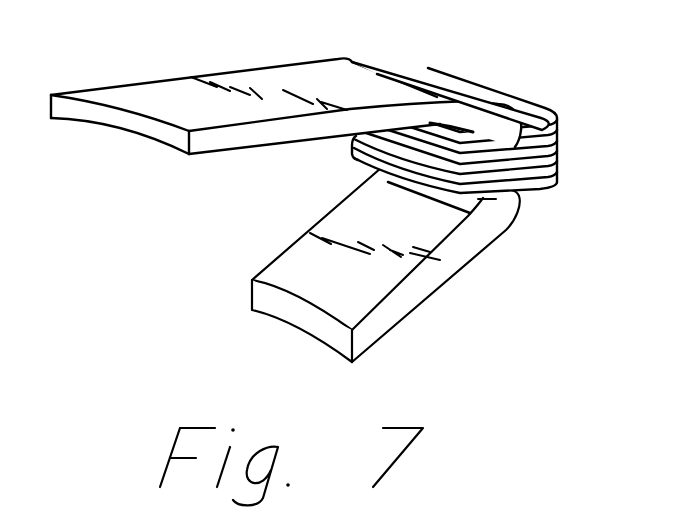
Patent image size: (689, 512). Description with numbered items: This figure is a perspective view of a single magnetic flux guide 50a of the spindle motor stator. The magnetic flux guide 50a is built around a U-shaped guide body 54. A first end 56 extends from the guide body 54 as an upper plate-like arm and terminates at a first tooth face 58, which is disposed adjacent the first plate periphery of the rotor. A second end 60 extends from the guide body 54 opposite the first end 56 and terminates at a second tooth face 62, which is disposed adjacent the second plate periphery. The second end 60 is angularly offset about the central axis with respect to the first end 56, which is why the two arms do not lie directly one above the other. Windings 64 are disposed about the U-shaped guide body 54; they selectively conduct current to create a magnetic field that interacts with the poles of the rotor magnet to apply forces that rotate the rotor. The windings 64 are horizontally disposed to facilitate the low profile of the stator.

The magnetic flux guide 50a is at (280, 72).
The U-shaped guide body 54 is at (388, 74).
The first end 56 is at (157, 83).
The first tooth face 58 is at (123, 120).
The second end 60 is at (308, 263).
The second tooth face 62 is at (306, 322).
The windings 64 is at (540, 118).